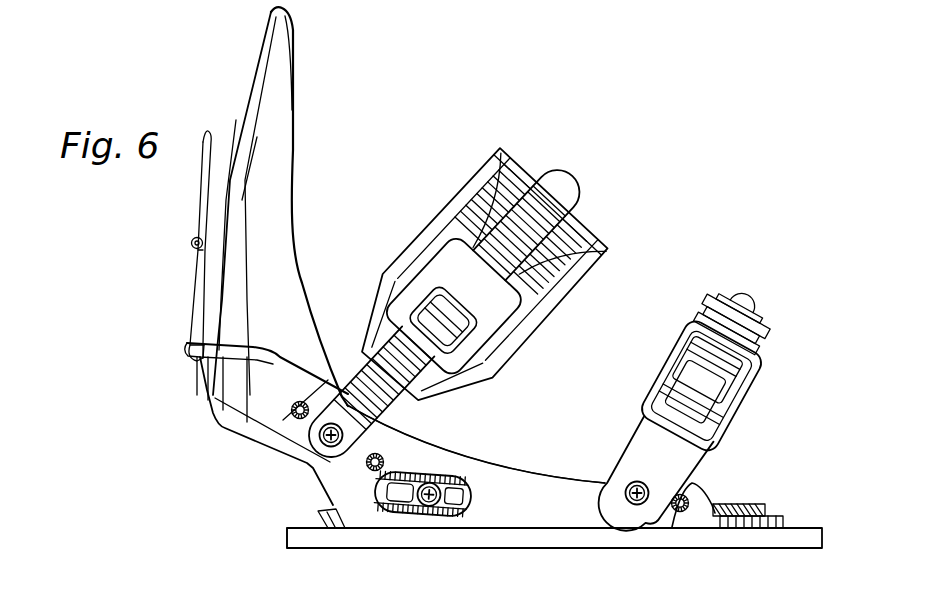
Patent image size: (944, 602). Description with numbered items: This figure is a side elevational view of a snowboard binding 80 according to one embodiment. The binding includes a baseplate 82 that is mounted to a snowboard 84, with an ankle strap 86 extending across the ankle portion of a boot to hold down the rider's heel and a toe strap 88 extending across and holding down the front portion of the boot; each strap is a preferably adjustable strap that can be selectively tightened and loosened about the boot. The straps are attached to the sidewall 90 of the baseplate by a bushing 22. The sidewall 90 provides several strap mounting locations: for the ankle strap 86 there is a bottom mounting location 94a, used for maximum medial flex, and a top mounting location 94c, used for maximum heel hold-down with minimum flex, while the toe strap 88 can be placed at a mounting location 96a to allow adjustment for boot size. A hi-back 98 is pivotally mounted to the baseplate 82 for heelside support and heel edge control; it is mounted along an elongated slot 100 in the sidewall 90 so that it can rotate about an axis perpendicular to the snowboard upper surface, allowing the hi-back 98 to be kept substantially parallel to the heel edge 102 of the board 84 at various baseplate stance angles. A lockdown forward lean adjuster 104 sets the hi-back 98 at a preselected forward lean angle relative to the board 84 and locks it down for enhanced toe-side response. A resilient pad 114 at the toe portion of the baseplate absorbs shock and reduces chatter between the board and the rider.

The bushing 22 is at (320, 444).
The snowboard binding 80 is at (632, 200).
The baseplate 82 is at (555, 462).
The snowboard 84 is at (792, 549).
The ankle strap 86 is at (530, 173).
The toe strap 88 is at (768, 332).
The sidewall 90 is at (507, 480).
The bottom mounting location 94a is at (335, 472).
The top mounting location 94c is at (283, 418).
The strap mounting location 96a is at (683, 513).
The hi-back 98 is at (268, 88).
The elongated slot 100 is at (420, 468).
The heel edge 102 is at (288, 542).
The lockdown forward lean adjuster 104 is at (190, 236).
The resilient pad 114 is at (745, 505).